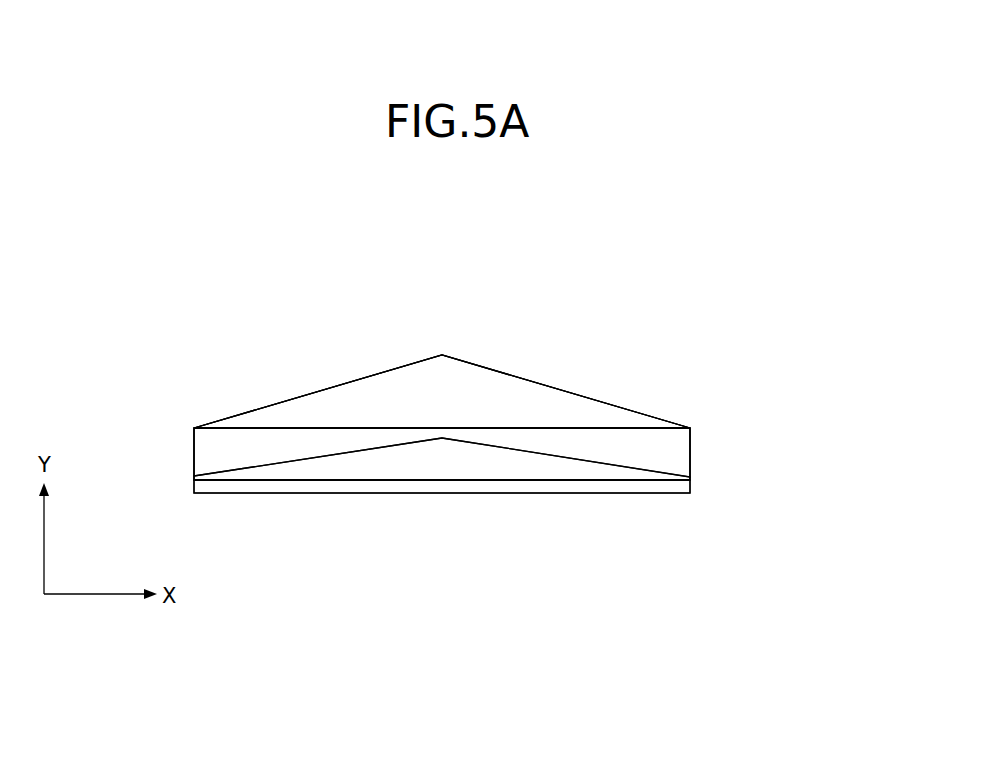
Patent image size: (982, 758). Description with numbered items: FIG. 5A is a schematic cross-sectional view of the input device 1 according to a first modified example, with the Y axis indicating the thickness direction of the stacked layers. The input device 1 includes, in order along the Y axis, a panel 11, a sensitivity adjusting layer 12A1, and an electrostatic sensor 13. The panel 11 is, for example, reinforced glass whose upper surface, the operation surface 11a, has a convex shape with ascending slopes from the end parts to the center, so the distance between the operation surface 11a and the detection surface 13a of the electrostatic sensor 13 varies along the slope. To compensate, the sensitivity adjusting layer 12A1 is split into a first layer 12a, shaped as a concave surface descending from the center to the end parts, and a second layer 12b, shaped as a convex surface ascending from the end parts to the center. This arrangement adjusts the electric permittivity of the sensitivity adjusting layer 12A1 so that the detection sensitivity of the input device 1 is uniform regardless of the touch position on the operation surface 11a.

The input device 1 is at (532, 293).
The panel 11 is at (592, 412).
The operation surface 11a is at (562, 393).
The sensitivity adjusting layer 12A1 is at (818, 382).
The first layer 12a is at (658, 440).
The second layer 12b is at (605, 473).
The detection surface 13a is at (658, 477).
The electrostatic sensor 13 is at (680, 491).